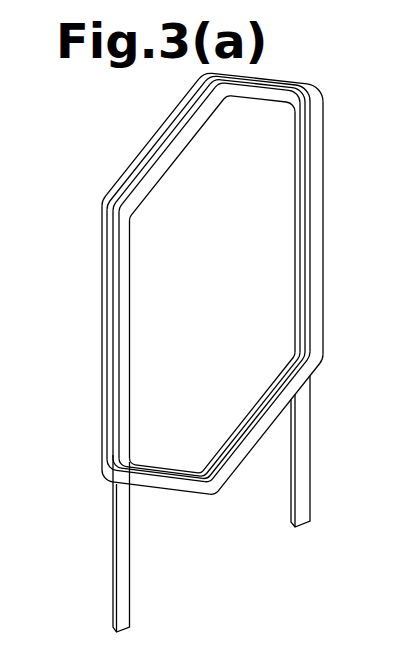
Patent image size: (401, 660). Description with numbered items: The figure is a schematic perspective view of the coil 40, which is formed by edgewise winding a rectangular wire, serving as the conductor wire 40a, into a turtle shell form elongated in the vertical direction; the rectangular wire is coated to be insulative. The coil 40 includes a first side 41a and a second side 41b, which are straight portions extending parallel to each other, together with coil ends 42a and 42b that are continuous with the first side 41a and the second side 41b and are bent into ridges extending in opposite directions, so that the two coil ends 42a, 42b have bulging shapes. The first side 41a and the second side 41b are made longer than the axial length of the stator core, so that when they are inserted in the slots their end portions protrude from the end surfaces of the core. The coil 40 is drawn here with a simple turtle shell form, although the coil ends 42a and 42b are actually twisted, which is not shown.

The coil 40 is at (334, 166).
The conductor wire 40a is at (310, 452).
The first side 41a is at (101, 312).
The second side 41b is at (324, 231).
The coil end 42a is at (140, 143).
The coil end 42b is at (240, 466).